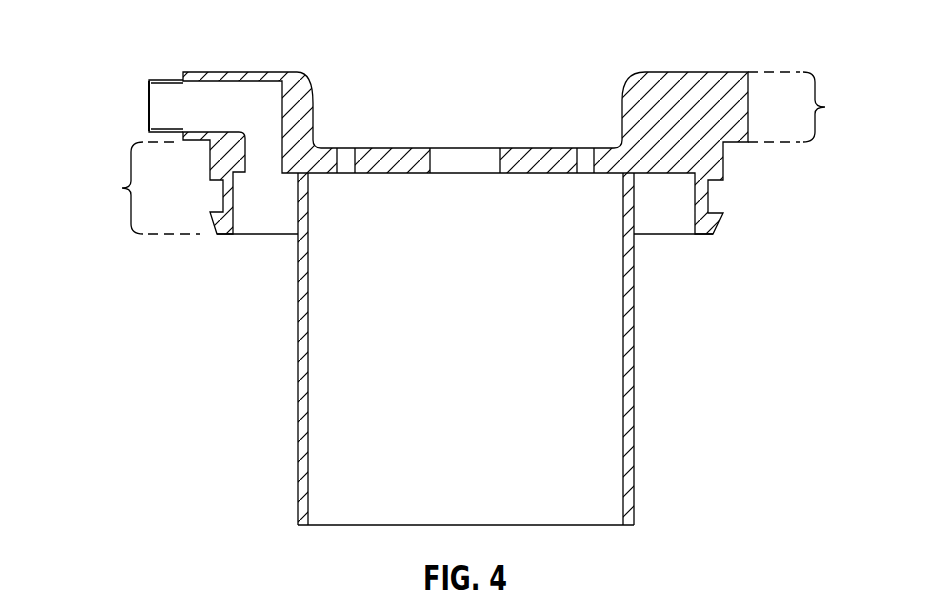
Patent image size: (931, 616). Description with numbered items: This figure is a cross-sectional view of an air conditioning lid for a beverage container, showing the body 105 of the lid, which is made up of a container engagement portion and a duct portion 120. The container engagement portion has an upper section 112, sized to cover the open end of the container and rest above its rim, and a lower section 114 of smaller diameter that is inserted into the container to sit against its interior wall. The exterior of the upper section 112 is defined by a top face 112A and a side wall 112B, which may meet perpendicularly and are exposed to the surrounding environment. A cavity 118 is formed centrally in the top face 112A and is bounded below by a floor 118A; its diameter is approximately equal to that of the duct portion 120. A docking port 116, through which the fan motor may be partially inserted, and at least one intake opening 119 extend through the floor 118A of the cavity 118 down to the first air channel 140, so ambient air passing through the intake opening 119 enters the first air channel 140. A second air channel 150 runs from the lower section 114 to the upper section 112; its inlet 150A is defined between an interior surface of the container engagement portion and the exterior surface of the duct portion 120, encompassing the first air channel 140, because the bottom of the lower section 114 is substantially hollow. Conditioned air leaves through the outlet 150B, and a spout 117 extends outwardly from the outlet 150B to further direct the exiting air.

The body 105 is at (448, 263).
The upper section 112 is at (774, 87).
The top face 112A is at (680, 72).
The side wall 112B is at (750, 128).
The lower section 114 is at (139, 188).
The docking port 116 is at (458, 165).
The spout 117 is at (158, 82).
The cavity 118 is at (465, 124).
The floor 118A is at (387, 150).
The intake opening 119 is at (585, 162).
The duct portion 120 is at (625, 415).
The first air channel 140 is at (345, 410).
The second air channel 150 is at (265, 142).
The inlet 150A is at (272, 212).
The outlet 150B is at (157, 103).